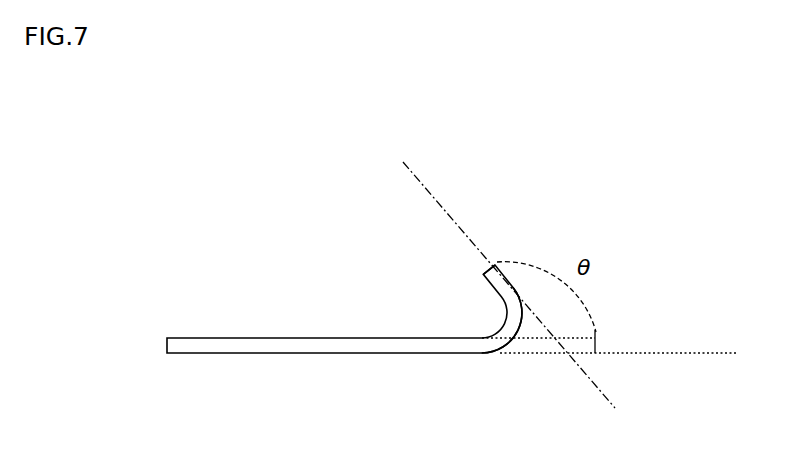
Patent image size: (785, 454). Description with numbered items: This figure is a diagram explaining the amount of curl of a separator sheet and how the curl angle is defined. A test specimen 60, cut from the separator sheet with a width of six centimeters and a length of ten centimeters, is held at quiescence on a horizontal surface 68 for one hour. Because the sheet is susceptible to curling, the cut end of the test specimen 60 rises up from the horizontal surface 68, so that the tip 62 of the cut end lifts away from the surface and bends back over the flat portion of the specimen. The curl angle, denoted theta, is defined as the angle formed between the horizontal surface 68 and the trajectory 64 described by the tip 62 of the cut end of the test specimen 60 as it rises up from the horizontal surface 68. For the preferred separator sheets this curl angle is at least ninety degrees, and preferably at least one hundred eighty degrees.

The test specimen 60 is at (262, 353).
The tip of the cut end 62 is at (491, 263).
The trajectory 64 is at (511, 259).
The horizontal surface 68 is at (692, 353).